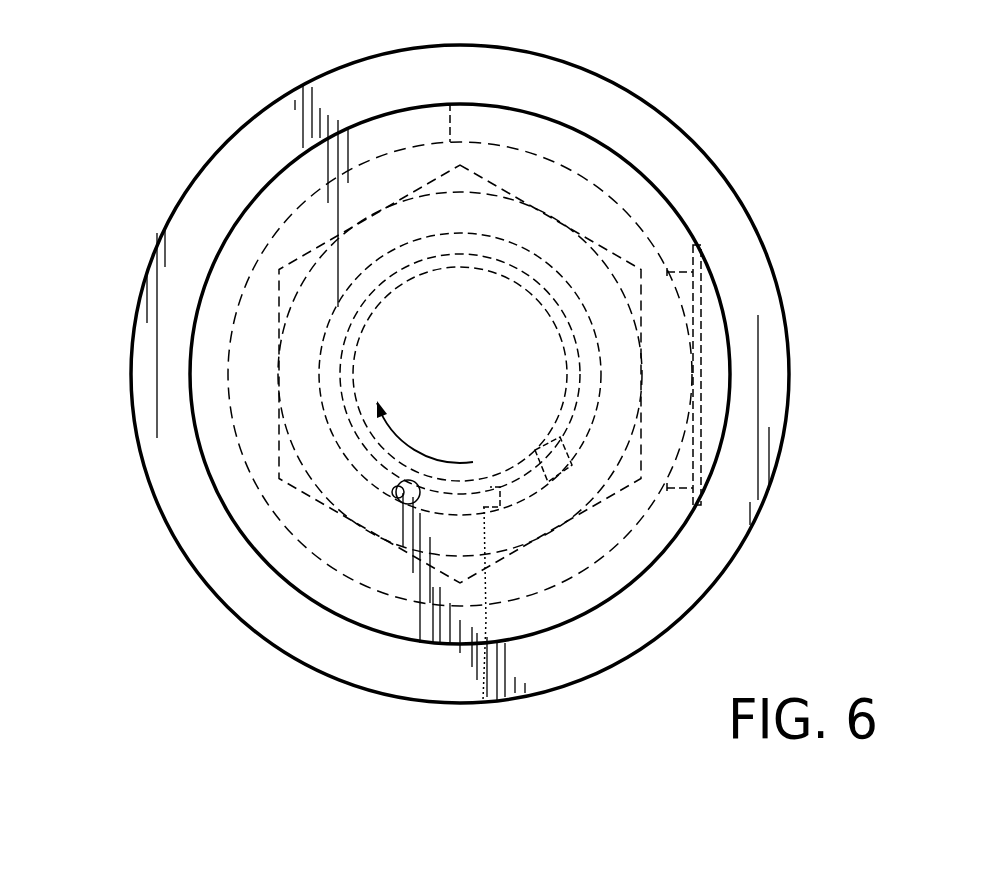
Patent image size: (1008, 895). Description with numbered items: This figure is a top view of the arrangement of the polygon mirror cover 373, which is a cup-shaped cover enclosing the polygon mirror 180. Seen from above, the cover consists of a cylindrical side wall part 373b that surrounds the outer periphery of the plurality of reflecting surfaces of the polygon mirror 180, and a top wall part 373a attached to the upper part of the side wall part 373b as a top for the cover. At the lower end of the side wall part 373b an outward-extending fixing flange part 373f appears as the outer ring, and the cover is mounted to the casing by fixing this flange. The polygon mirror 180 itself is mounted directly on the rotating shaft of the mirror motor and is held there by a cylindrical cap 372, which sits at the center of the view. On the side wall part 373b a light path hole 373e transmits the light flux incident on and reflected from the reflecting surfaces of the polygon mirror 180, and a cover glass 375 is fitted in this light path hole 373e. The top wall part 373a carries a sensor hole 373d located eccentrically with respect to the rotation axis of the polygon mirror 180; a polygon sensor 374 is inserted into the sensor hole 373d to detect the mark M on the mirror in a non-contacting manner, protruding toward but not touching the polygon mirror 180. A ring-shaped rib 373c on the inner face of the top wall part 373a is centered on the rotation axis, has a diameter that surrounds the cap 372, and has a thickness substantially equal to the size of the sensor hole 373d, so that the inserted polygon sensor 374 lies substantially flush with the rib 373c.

The polygon mirror cover 373 is at (614, 74).
The top wall part 373a is at (590, 213).
The cylindrical side wall part 373b is at (450, 112).
The ring-shaped rib 373c is at (483, 700).
The sensor hole 373d is at (398, 500).
The light path hole 373e is at (703, 380).
The fixing flange part 373f is at (745, 256).
The cylindrical cap 372 is at (382, 348).
The polygon sensor 374 is at (408, 505).
The cover glass 375 is at (700, 464).
The polygon mirror 180 is at (640, 487).
The mark M is at (553, 430).